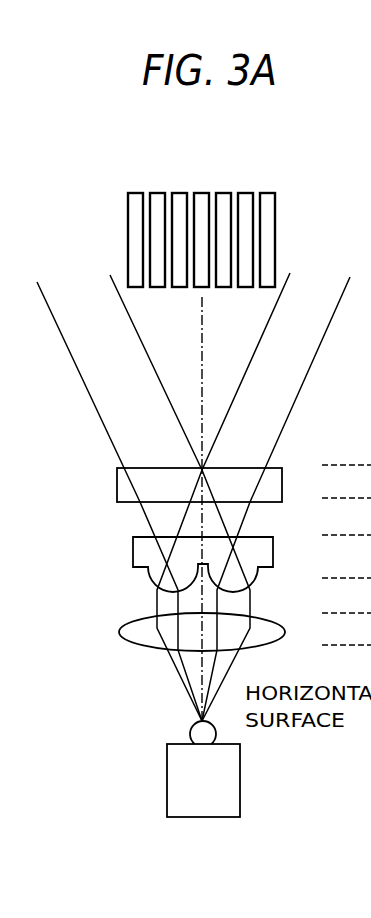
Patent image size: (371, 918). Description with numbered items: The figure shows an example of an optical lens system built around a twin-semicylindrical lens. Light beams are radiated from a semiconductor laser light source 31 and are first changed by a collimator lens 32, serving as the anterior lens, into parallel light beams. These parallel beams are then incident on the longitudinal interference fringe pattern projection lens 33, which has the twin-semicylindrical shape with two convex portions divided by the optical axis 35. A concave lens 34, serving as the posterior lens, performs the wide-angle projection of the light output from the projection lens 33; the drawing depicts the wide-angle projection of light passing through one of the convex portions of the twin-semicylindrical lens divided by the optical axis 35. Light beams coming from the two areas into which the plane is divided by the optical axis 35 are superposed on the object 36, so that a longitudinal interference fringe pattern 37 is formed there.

The semiconductor laser light source 31 is at (165, 778).
The collimator lens 32 is at (120, 633).
The longitudinal interference fringe pattern projection lens 33 is at (133, 550).
The concave lens 34 is at (117, 487).
The optical axis 35 is at (205, 310).
The object 36 is at (303, 238).
The longitudinal interference fringe pattern 37 is at (202, 183).